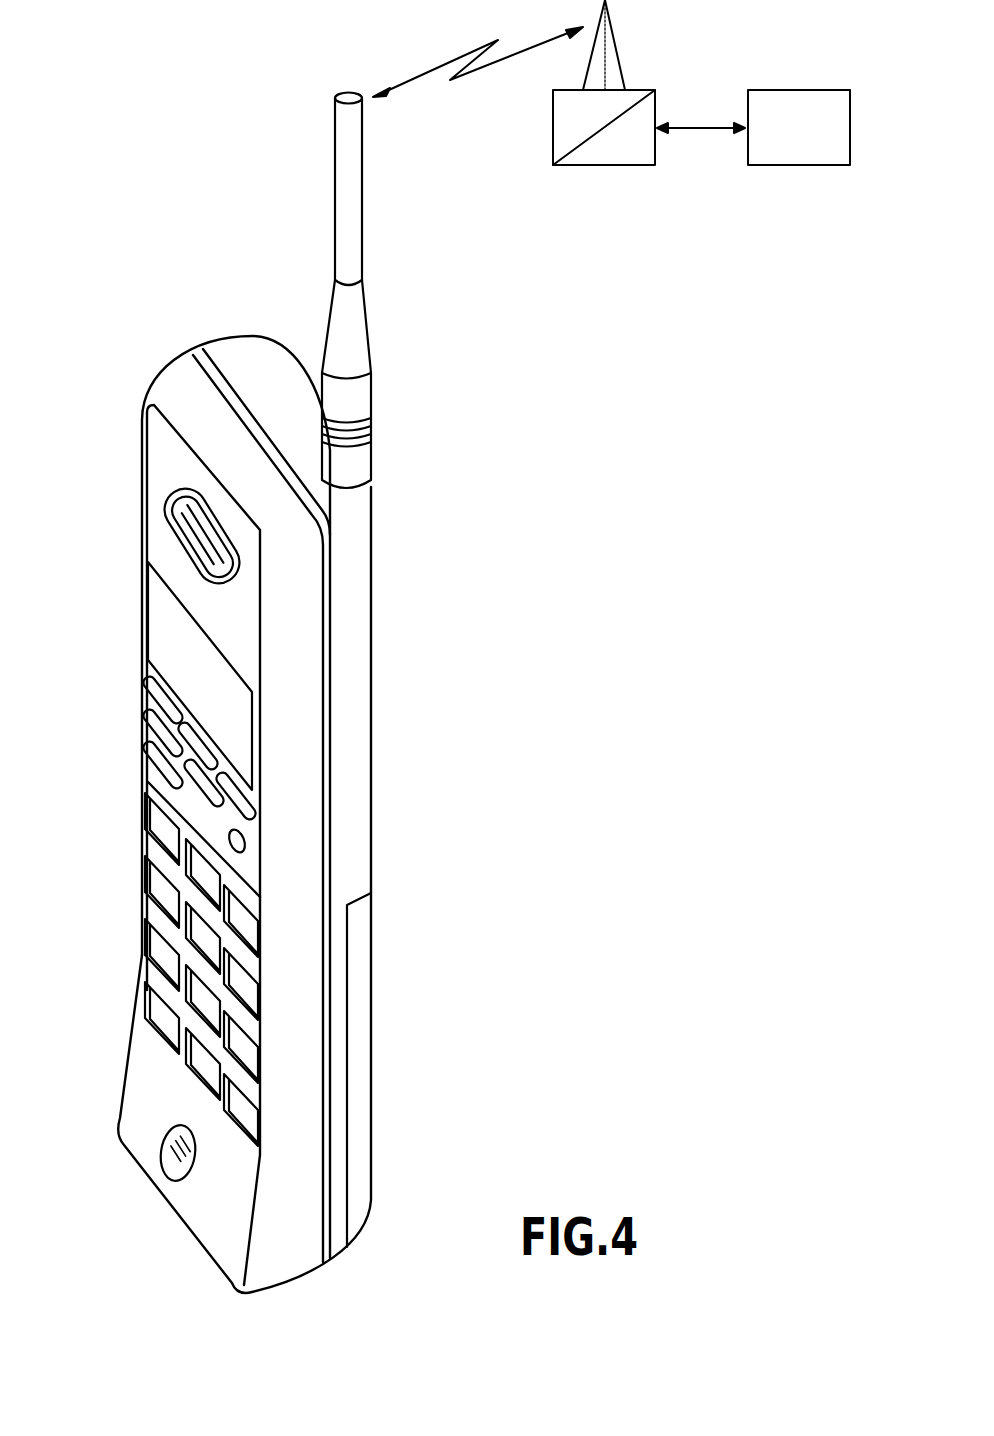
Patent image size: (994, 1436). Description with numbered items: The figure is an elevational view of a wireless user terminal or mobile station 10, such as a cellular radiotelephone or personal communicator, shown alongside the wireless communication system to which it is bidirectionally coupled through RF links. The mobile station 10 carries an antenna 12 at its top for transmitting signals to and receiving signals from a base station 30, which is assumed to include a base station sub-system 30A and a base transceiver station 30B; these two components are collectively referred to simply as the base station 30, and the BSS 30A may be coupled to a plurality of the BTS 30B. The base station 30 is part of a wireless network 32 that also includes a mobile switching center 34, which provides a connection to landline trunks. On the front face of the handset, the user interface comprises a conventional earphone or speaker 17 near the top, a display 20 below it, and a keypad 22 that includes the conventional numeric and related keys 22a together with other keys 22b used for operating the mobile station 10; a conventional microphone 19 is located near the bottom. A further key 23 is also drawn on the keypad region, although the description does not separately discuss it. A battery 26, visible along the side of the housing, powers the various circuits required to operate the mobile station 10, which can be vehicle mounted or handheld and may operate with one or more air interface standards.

The mobile station 10 is at (123, 380).
The antenna 12 is at (340, 172).
The speaker 17 is at (190, 510).
The microphone 19 is at (170, 1168).
The display 20 is at (163, 630).
The keypad 22 is at (174, 910).
The numeric and related keys 22a is at (197, 870).
The other keys 22b is at (192, 748).
The key 23 is at (244, 840).
The battery 26 is at (368, 1043).
The base station 30 is at (610, 123).
The base station sub-system 30A is at (692, 183).
The base transceiver station 30B is at (560, 120).
The wireless network 32 is at (611, 149).
The mobile switching center 34 is at (799, 149).